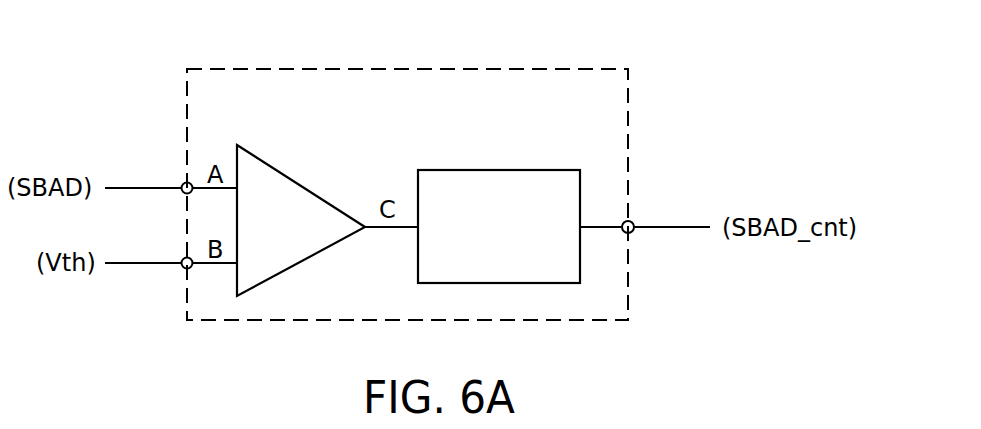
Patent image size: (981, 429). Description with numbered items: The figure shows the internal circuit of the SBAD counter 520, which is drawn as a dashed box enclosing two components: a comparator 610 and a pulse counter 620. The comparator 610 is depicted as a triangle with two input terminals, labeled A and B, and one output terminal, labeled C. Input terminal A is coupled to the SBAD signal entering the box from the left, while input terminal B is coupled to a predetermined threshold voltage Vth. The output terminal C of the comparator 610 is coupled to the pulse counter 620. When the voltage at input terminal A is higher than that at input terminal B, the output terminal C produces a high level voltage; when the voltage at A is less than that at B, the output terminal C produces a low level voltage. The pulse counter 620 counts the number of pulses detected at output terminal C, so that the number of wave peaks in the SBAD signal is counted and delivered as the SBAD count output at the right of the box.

The SBAD counter 520 is at (497, 75).
The comparator 610 is at (285, 195).
The pulse counter 620 is at (487, 180).